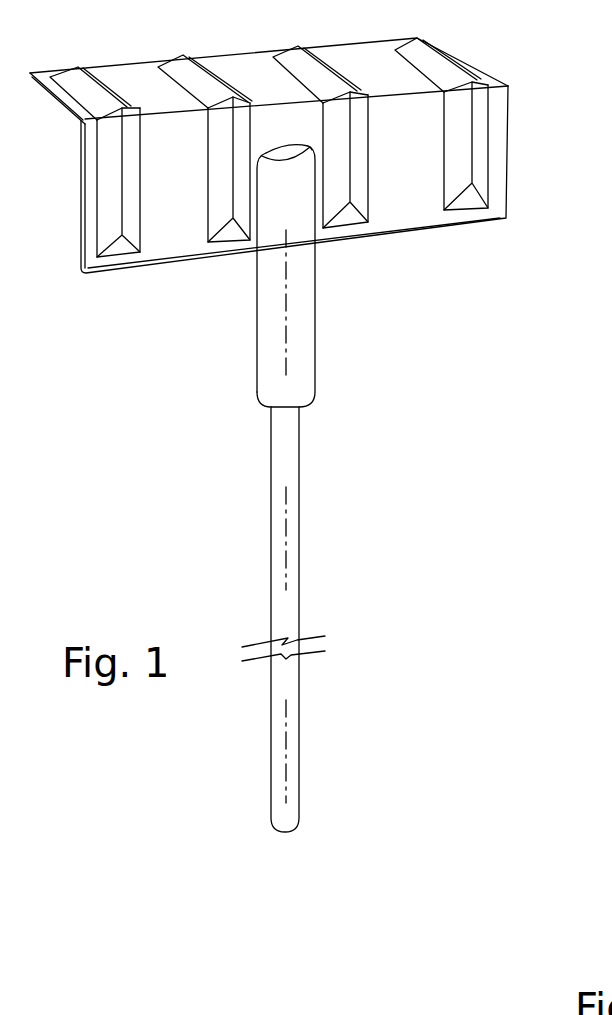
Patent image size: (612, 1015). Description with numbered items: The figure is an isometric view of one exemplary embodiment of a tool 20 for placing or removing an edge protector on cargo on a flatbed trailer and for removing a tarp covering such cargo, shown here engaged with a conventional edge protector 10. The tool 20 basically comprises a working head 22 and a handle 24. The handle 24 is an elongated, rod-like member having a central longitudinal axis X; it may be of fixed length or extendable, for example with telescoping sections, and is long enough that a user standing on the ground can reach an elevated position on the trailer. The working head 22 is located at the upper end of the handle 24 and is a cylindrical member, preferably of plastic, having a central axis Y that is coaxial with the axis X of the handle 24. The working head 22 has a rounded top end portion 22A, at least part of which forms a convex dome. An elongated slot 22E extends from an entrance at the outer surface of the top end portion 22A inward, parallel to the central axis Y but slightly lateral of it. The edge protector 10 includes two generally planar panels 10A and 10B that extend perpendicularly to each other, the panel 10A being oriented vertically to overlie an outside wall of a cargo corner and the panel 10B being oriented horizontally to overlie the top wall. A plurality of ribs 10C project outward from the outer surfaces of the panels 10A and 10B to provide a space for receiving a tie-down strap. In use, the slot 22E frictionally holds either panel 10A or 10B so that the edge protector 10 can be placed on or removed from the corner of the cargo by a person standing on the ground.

The edge protector 10 is at (128, 78).
The planar panel 10A is at (475, 68).
The planar panel 10B is at (508, 174).
The ribs 10C is at (223, 197).
The tool 20 is at (195, 418).
The working head 22 is at (297, 287).
The top end portion 22A is at (306, 162).
The elongated slot 22E is at (283, 148).
The handle 24 is at (301, 548).
The central longitudinal axis X is at (287, 540).
The central axis Y is at (286, 306).